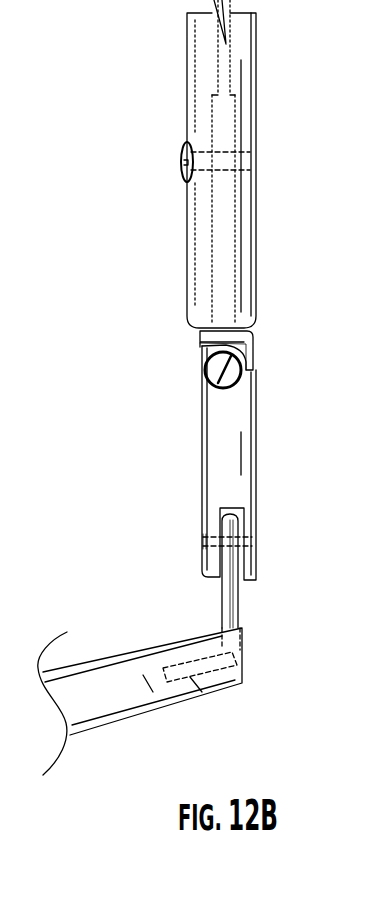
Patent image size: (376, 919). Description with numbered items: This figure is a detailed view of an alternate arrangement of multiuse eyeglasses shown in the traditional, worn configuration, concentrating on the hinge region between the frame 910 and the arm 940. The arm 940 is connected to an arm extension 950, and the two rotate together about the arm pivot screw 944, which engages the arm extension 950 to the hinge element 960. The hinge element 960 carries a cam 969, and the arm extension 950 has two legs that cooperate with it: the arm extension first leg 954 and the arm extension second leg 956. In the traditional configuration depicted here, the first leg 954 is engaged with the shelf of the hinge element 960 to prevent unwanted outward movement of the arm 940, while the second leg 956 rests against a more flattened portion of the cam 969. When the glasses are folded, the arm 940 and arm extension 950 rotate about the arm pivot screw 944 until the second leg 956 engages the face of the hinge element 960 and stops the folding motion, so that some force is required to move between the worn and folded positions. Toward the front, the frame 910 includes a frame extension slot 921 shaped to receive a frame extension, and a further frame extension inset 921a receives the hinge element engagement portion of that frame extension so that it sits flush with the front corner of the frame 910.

The arm 940 is at (258, 87).
The arm extension second leg 956 is at (220, 335).
The arm extension 950 is at (258, 337).
The cam 969 is at (202, 348).
The arm pivot screw 944 is at (216, 370).
The hinge element 960 is at (257, 450).
The arm extension first leg 954 is at (254, 357).
The frame extension slot 921 is at (210, 698).
The frame extension inset 921a is at (243, 638).
The frame 910 is at (130, 702).